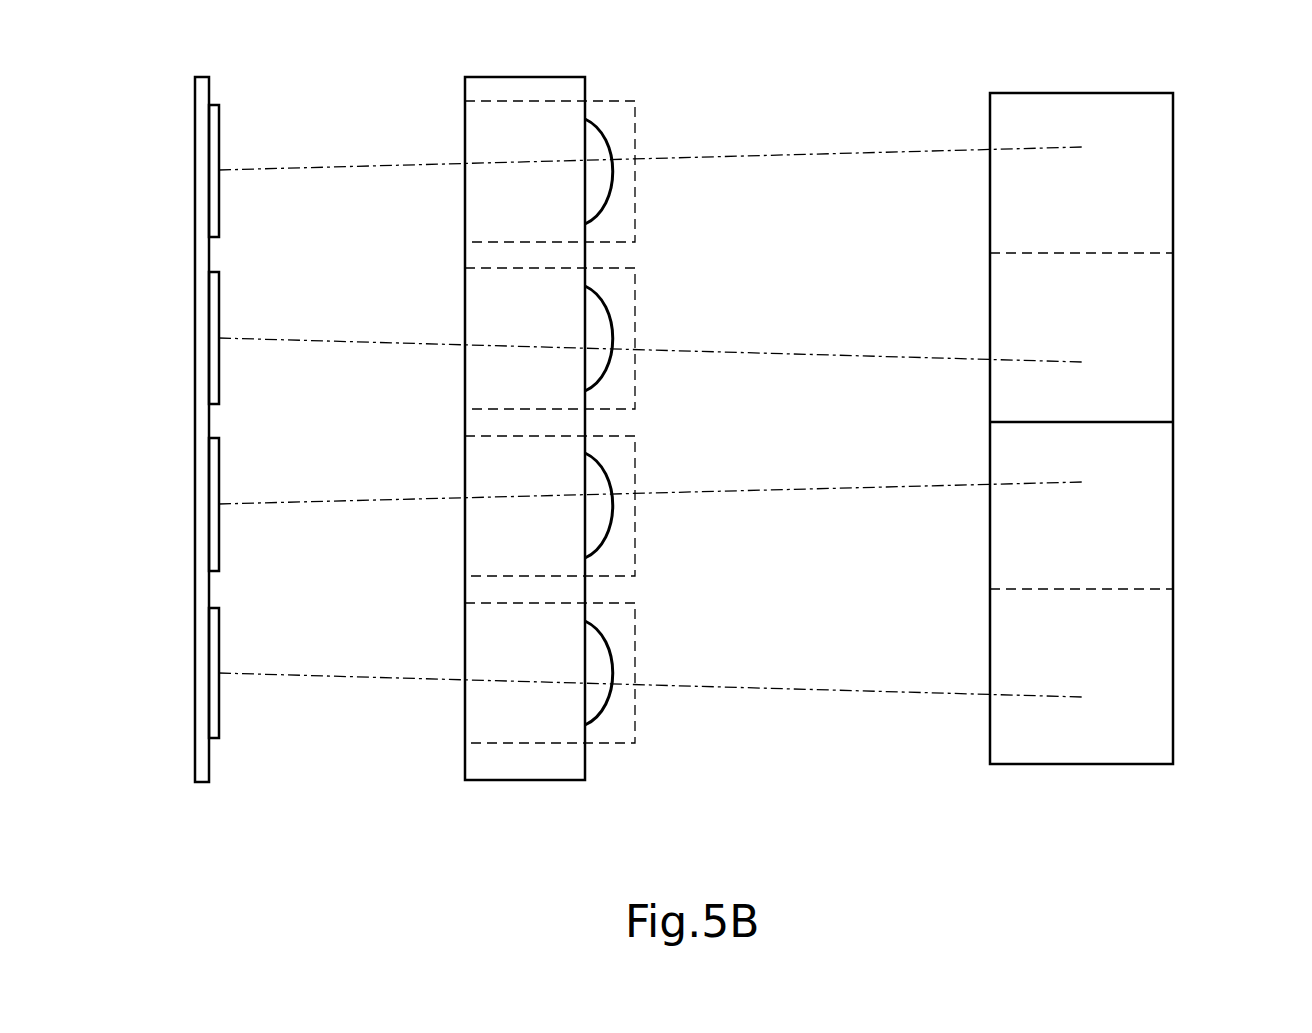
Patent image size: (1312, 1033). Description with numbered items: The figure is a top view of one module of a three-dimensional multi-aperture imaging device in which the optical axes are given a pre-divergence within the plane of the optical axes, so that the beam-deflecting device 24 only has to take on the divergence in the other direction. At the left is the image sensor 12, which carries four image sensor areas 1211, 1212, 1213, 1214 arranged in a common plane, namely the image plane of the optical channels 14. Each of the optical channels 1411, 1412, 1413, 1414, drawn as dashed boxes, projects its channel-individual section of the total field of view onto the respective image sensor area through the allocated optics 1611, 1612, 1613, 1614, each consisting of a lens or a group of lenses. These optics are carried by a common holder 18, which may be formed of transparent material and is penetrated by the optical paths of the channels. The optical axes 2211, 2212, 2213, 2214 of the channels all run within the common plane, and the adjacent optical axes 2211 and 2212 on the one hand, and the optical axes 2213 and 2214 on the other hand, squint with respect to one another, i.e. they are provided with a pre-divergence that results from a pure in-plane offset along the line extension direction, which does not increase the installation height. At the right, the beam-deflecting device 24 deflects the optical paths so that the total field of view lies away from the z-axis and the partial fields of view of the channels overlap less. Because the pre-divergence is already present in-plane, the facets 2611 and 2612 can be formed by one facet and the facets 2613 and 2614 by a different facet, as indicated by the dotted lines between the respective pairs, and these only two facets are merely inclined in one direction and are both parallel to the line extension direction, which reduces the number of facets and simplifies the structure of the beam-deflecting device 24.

The image sensor 12 is at (200, 71).
The image sensor area 1214 is at (219, 197).
The image sensor area 1213 is at (219, 364).
The image sensor area 1212 is at (219, 530).
The image sensor area 1211 is at (219, 700).
The optical channels 14 is at (609, 482).
The optical channel 1414 is at (623, 175).
The optical channel 1413 is at (623, 344).
The optical channel 1412 is at (623, 512).
The optical channel 1411 is at (623, 679).
The optics 1614 is at (635, 142).
The optics 1613 is at (635, 309).
The optics 1612 is at (635, 478).
The optics 1611 is at (635, 644).
The holder 18 is at (520, 783).
The optical axis 2214 is at (855, 152).
The optical axis 2213 is at (855, 356).
The optical axis 2212 is at (855, 488).
The optical axis 2211 is at (855, 691).
The beam-deflecting device 24 is at (1075, 775).
The facet 2614 is at (1155, 177).
The facet 2613 is at (1155, 345).
The facet 2612 is at (1155, 512).
The facet 2611 is at (1155, 680).